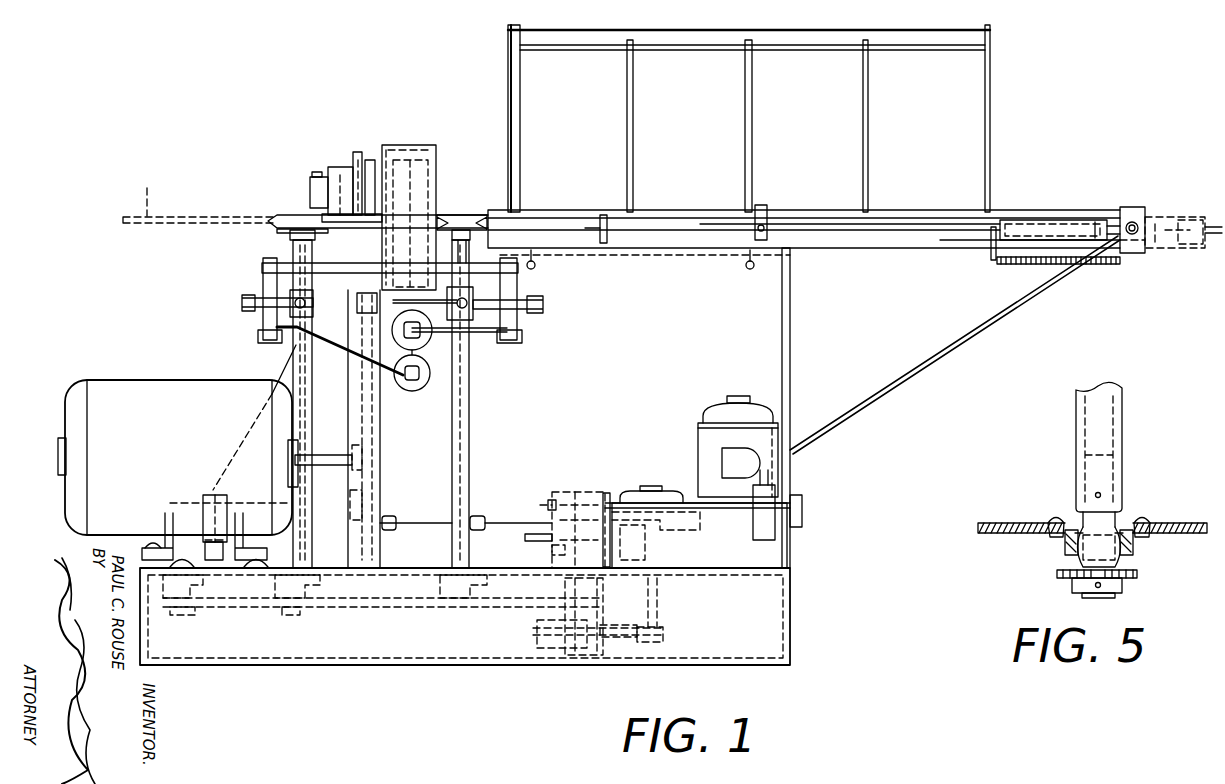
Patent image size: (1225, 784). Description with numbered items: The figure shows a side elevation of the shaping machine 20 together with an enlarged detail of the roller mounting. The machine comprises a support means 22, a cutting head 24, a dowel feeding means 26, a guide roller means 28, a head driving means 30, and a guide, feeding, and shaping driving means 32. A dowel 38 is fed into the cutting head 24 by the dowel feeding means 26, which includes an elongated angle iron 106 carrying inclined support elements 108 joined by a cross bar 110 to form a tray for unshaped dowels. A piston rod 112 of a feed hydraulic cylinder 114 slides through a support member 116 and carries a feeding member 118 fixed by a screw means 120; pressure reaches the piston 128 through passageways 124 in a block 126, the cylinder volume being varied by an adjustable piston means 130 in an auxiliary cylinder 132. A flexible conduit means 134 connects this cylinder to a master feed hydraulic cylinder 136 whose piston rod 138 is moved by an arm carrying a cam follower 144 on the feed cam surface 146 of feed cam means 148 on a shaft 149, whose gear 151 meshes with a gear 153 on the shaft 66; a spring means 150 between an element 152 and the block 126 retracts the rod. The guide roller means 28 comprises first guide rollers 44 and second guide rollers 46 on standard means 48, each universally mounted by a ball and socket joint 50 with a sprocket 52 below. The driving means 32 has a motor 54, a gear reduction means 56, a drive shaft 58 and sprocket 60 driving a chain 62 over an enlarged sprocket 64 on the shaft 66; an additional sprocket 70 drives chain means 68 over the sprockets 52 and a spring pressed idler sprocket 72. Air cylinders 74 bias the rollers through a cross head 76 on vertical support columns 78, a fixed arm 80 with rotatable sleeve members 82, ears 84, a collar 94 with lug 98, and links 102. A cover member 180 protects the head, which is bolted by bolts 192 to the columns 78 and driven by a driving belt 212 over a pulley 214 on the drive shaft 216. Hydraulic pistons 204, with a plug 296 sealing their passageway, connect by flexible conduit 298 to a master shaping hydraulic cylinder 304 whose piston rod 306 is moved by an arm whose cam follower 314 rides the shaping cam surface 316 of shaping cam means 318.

In FIG. 1, the shaping machine 20 is at (243, 209).
In FIG. 1, the support means 22 is at (773, 612).
In FIG. 5, the support means 22 is at (1170, 525).
In FIG. 1, the cutting head 24 is at (442, 180).
In FIG. 1, the dowel feeding means 26 is at (1062, 214).
In FIG. 1, the guide roller means 28 is at (275, 213).
In FIG. 1, the head driving means 30 is at (121, 382).
In FIG. 1, the guide, feeding, and shaping driving means 32 is at (741, 396).
In FIG. 1, the dowel 38 is at (147, 194).
In FIG. 1, the first pair of spaced guide rollers 44 is at (465, 214).
In FIG. 1, the second pair of spaced guide rollers 46 is at (268, 234).
In FIG. 1, the standard means 48 is at (302, 430).
In FIG. 5, the standard means 48 is at (1122, 422).
In FIG. 5, the ball and socket joint 50 is at (1119, 525).
In FIG. 1, the sprocket 52 is at (288, 622).
In FIG. 5, the sprocket 52 is at (1138, 570).
In FIG. 1, the motor 54 is at (700, 445).
In FIG. 1, the gear reduction means 56 is at (672, 492).
In FIG. 1, the drive shaft 58 is at (660, 592).
In FIG. 1, the sprocket 60 is at (664, 628).
In FIG. 1, the chain 62 is at (622, 628).
In FIG. 1, the enlarged sprocket 64 is at (540, 636).
In FIG. 1, the rotatably supported shaft 66 is at (565, 588).
In FIG. 1, the chain means 68 is at (360, 615).
In FIG. 1, the additional sprocket 70 is at (545, 618).
In FIG. 1, the spring pressed idler sprocket 72 is at (200, 615).
In FIG. 1, the air cylinders 74 is at (424, 336).
In FIG. 1, the cross head 76 is at (358, 324).
In FIG. 1, the vertical support columns 78 is at (355, 381).
In FIG. 1, the fixed arm 80 is at (286, 262).
In FIG. 1, the rotatable sleeve members 82 is at (264, 334).
In FIG. 1, the ears 84 is at (262, 312).
In FIG. 1, the collar 94 is at (270, 296).
In FIG. 1, the lug 98 is at (372, 314).
In FIG. 1, the links 102 is at (345, 345).
In FIG. 1, the angle iron 106 is at (848, 244).
In FIG. 1, the inclined support elements 108 is at (520, 75).
In FIG. 1, the cross bar 110 is at (712, 46).
In FIG. 1, the piston rod 112 is at (912, 222).
In FIG. 1, the feed hydraulic cylinder 114 is at (1041, 220).
In FIG. 1, the support member 116 is at (598, 218).
In FIG. 1, the feeding member 118 is at (762, 205).
In FIG. 1, the screw means 120 is at (768, 220).
In FIG. 1, the passageways 124 is at (1140, 246).
In FIG. 1, the block 126 is at (1135, 260).
In FIG. 1, the piston 128 is at (1107, 216).
In FIG. 1, the adjustable piston means 130 is at (1160, 218).
In FIG. 1, the auxiliary cylinder 132 is at (1186, 216).
In FIG. 1, the flexible conduit means 134 is at (955, 342).
In FIG. 1, the master feed hydraulic cylinder 136 is at (802, 506).
In FIG. 1, the piston rod 138 is at (660, 515).
In FIG. 1, the cam follower 144 is at (605, 492).
In FIG. 1, the feed cam surface 146 is at (552, 494).
In FIG. 1, the feed cam means 148 is at (566, 494).
In FIG. 1, the shaft 149 is at (552, 504).
In FIG. 1, the spring means 150 is at (1000, 268).
In FIG. 1, the gear 151 is at (540, 538).
In FIG. 1, the element 152 is at (990, 254).
In FIG. 1, the gear 153 is at (552, 550).
In FIG. 1, the cover member 180 is at (432, 150).
In FIG. 1, the bolts 192 is at (360, 213).
In FIG. 1, the hydraulic pistons 204 is at (311, 183).
In FIG. 1, the driving belt 212 is at (405, 389).
In FIG. 1, the pulley 214 is at (352, 492).
In FIG. 1, the drive shaft 216 is at (342, 456).
In FIG. 1, the plug 296 is at (316, 171).
In FIG. 1, the flexible conduit 298 is at (280, 370).
In FIG. 1, the master shaping hydraulic cylinder 304 is at (199, 494).
In FIG. 1, the piston rod 306 is at (433, 518).
In FIG. 1, the cam follower 314 is at (480, 514).
In FIG. 1, the shaping cam surface 316 is at (645, 525).
In FIG. 1, the shaping cam means 318 is at (524, 522).